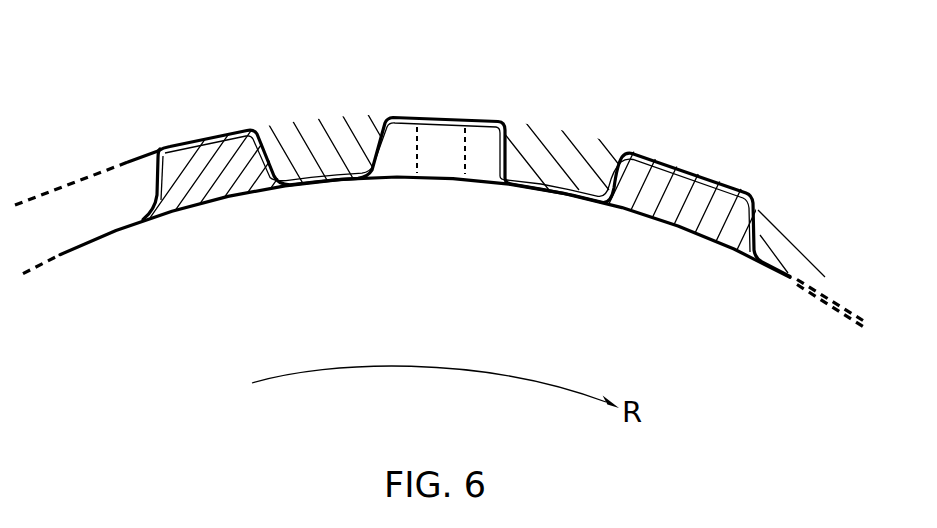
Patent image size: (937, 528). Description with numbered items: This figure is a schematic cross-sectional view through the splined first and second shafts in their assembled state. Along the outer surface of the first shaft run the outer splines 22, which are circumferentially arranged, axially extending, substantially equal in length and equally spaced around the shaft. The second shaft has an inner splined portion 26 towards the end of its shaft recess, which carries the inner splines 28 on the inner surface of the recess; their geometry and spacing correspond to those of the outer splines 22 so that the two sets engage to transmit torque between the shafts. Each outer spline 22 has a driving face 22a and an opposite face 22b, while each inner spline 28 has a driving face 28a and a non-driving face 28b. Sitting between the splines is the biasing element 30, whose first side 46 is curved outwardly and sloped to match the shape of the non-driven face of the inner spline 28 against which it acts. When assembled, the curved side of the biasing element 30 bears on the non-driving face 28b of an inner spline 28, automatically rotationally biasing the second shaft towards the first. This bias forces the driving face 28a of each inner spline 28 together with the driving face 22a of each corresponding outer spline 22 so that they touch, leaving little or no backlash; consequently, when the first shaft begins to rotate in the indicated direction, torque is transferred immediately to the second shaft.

The outer spline 22 is at (200, 183).
The driving face of outer spline 22a is at (263, 172).
The face of outer spline 22b is at (159, 193).
The inner splined portion 26 is at (677, 217).
The inner spline 28 is at (310, 148).
The driving face of inner spline 28a is at (270, 130).
The non-driving face of inner spline 28b is at (383, 135).
The biasing element 30 is at (478, 167).
The first side of biasing element 46 is at (383, 158).